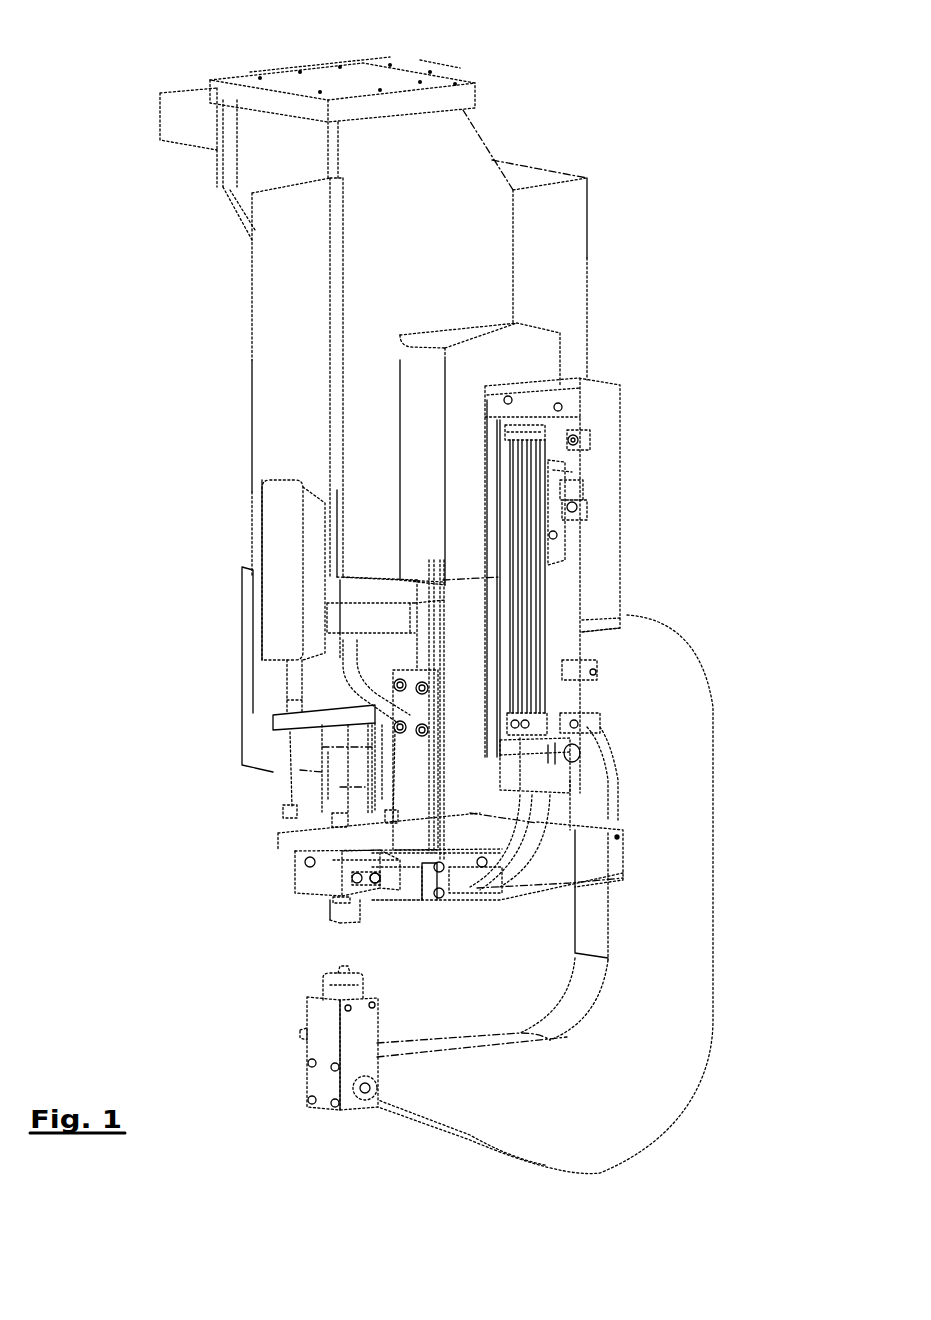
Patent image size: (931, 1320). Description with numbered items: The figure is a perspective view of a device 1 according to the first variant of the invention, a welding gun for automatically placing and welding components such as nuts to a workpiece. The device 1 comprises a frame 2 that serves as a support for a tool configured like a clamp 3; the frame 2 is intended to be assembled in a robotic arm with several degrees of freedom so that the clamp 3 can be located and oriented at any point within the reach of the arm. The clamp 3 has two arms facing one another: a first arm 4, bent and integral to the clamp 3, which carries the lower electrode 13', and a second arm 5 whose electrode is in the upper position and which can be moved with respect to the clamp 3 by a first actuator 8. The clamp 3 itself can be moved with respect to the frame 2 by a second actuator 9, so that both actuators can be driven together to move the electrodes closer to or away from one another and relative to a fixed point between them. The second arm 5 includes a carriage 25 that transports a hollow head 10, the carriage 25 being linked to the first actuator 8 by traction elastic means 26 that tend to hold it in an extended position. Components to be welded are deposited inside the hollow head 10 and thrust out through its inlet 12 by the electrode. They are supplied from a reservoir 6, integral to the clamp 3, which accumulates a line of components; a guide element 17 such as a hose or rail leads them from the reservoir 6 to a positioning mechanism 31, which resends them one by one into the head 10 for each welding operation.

The device 1 is at (225, 477).
The frame 2 is at (232, 187).
The clamp 3 is at (277, 560).
The first arm 4 is at (418, 1117).
The second arm 5 is at (297, 773).
The reservoir 6 is at (568, 533).
The first actuator 8 is at (287, 391).
The second actuator 9 is at (600, 412).
The hollow head 10 is at (295, 852).
The inlet 12 is at (342, 922).
The electrode 13' is at (274, 1038).
The guide element 17 is at (535, 835).
The carriage 25 is at (327, 622).
The elastic means 26 is at (288, 678).
The positioning mechanism 31 is at (525, 885).